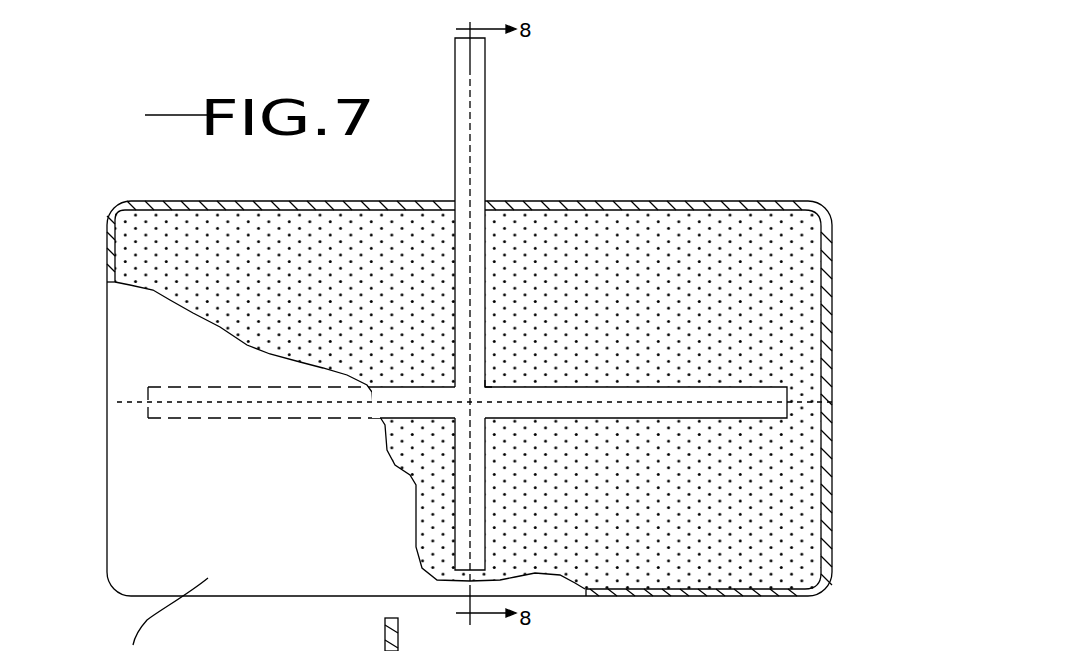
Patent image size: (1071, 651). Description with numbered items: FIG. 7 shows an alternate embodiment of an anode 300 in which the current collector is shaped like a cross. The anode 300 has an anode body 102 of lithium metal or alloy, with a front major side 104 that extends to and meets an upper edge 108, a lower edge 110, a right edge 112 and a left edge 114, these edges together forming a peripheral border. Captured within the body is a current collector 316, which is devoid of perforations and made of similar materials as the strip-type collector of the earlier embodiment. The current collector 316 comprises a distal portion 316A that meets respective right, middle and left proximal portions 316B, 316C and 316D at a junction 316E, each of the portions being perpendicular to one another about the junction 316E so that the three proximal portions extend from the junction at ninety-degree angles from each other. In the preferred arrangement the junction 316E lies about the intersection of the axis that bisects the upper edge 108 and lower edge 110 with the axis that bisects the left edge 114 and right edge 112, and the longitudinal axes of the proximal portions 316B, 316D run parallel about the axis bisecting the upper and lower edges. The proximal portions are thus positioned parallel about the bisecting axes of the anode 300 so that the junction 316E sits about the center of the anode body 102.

The anode 300 is at (747, 141).
The anode body 102 is at (797, 303).
The front major side 104 is at (764, 548).
The upper edge 108 is at (627, 203).
The lower edge 110 is at (677, 590).
The right edge 112 is at (827, 494).
The left edge 114 is at (110, 248).
The current collector 316 is at (468, 155).
The distal portion 316A is at (475, 103).
The right proximal portion 316B is at (775, 396).
The middle proximal portion 316C is at (480, 553).
The left proximal portion 316D is at (173, 383).
The junction 316E is at (477, 395).